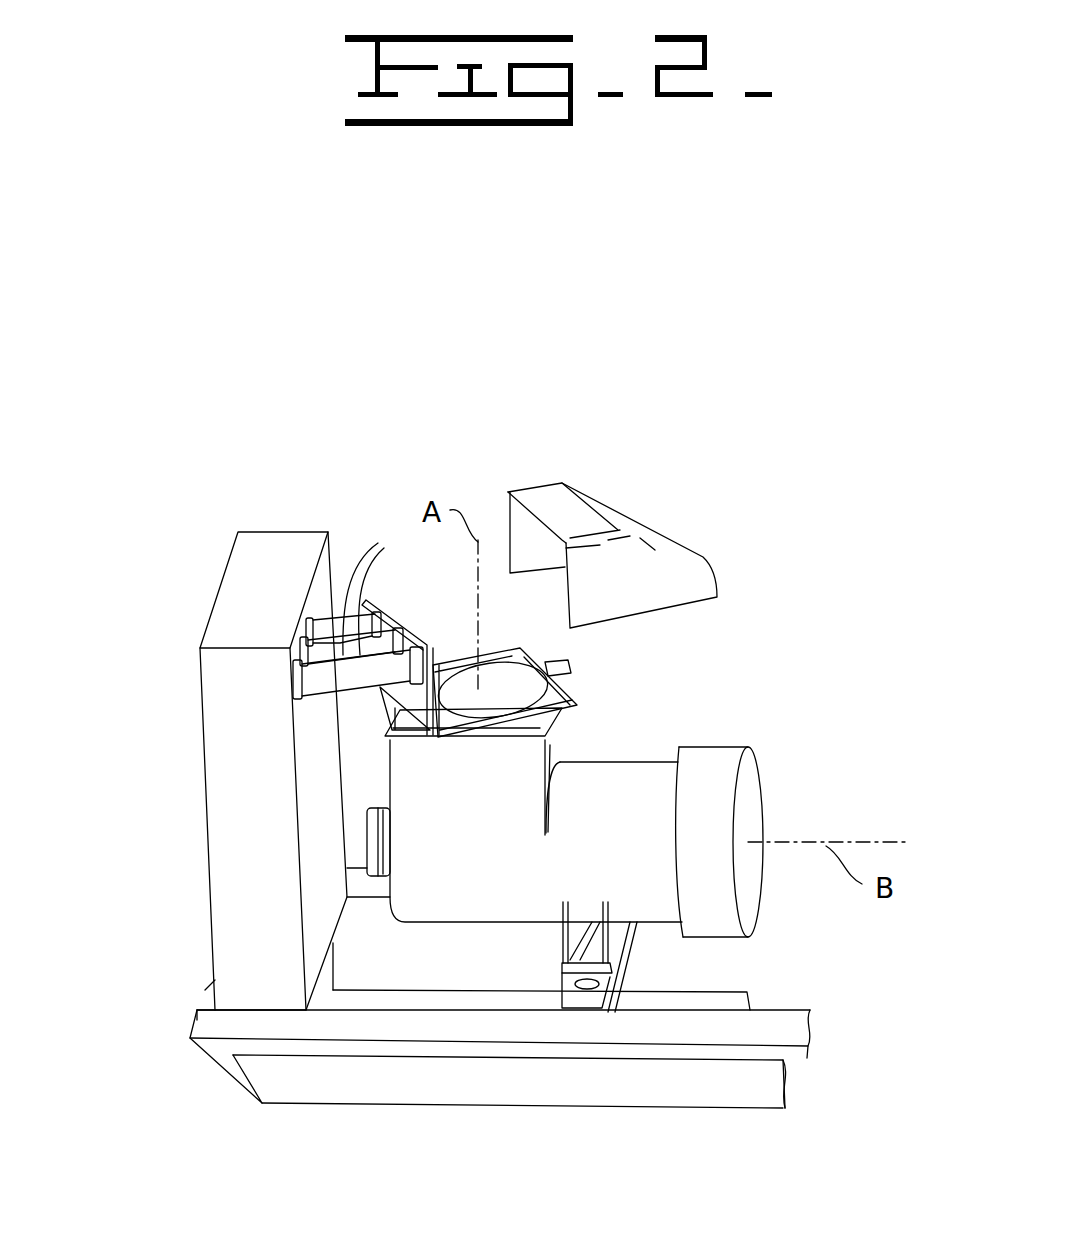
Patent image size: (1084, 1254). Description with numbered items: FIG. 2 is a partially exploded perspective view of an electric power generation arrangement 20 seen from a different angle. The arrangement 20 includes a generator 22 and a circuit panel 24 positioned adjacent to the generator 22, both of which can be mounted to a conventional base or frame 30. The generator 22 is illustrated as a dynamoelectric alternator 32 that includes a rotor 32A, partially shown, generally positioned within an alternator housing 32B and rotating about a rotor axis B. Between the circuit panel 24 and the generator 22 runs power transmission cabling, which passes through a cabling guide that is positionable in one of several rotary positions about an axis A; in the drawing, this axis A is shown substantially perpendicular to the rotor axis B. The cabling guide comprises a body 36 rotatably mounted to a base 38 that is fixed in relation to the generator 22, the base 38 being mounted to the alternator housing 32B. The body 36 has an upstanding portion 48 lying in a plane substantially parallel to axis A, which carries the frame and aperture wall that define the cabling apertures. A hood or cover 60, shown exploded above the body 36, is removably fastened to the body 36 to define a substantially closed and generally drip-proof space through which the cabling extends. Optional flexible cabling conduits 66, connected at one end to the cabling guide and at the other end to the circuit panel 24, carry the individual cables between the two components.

The electric power generation arrangement 20 is at (163, 572).
The generator 22 is at (720, 790).
The circuit panel 24 is at (227, 735).
The base or frame 30 is at (780, 1028).
The alternator 32 is at (617, 784).
The rotor 32A is at (368, 838).
The alternator housing 32B is at (632, 858).
The body 36 is at (570, 678).
The base 38 is at (558, 674).
The upstanding portion 48 is at (403, 626).
The hood or cover 60 is at (637, 520).
The flexible cabling conduits 66 is at (367, 548).